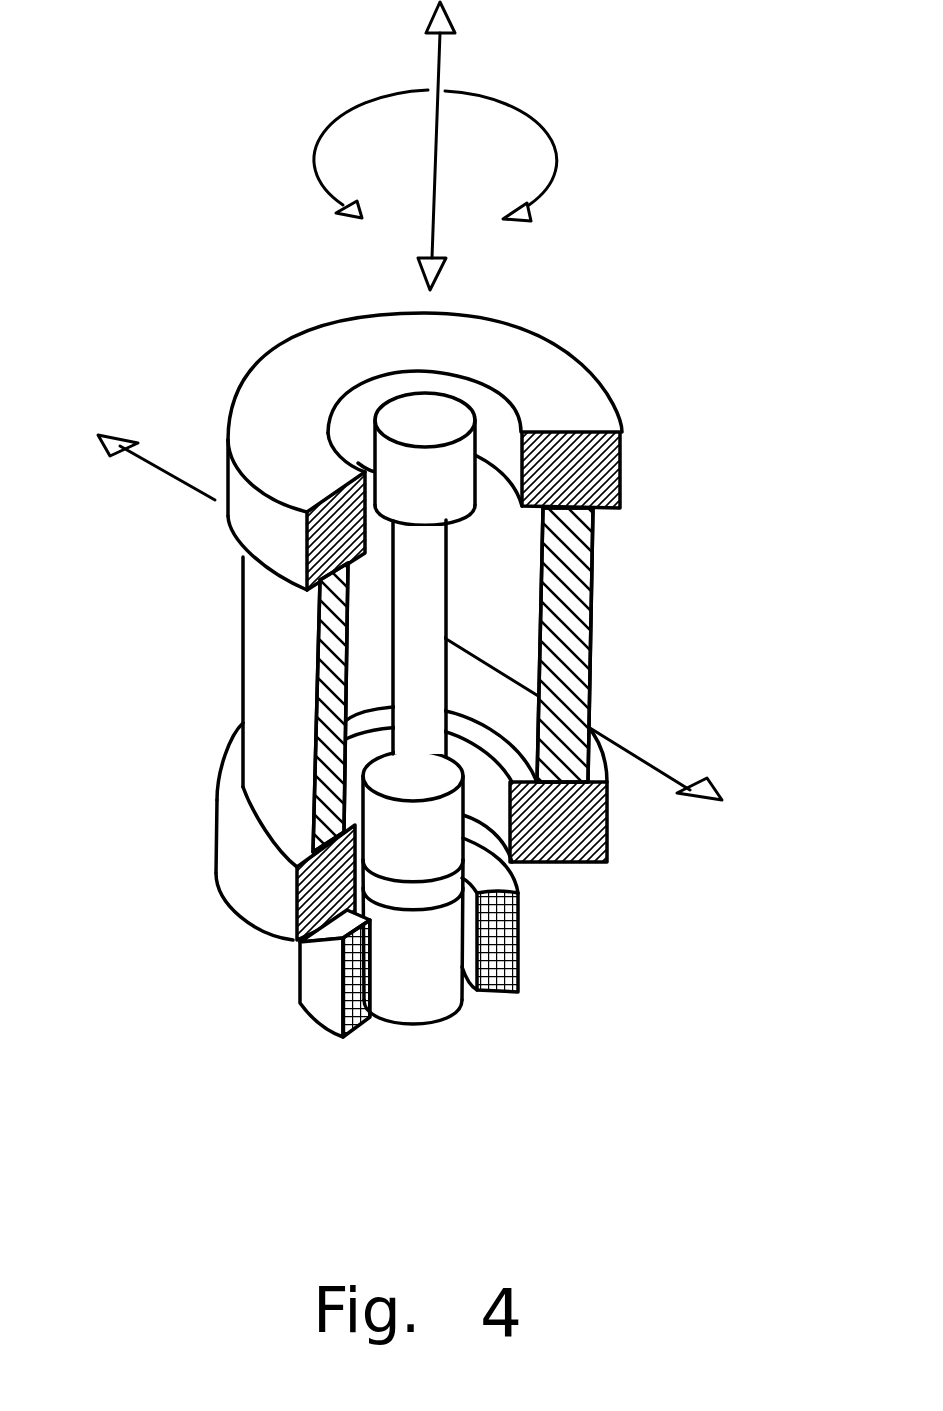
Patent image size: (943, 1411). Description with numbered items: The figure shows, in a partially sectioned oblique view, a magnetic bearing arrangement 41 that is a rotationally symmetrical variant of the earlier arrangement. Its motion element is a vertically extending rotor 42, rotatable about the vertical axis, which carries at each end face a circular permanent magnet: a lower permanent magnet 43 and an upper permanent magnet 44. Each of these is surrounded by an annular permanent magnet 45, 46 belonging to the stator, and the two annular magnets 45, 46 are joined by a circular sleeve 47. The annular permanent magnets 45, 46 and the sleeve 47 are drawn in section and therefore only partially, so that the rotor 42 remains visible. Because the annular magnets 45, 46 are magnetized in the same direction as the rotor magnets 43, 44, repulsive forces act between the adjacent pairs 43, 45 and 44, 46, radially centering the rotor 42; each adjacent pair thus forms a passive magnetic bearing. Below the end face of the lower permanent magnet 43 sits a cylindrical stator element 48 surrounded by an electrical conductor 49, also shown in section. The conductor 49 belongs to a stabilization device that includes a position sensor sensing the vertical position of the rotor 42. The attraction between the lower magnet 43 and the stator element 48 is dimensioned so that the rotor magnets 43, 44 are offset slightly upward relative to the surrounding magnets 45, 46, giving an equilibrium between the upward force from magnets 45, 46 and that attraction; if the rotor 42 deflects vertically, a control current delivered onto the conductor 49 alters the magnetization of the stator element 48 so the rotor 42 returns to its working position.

The magnetic bearing arrangement 41 is at (630, 298).
The rotor 42 is at (427, 580).
The lower permanent magnet 43 is at (417, 857).
The upper permanent magnet 44 is at (437, 417).
The annular permanent magnet 45 is at (247, 892).
The annular permanent magnet 46 is at (583, 397).
The circular sleeve 47 is at (272, 673).
The cylindrical stator element 48 is at (430, 1000).
The electrical conductor 49 is at (323, 993).